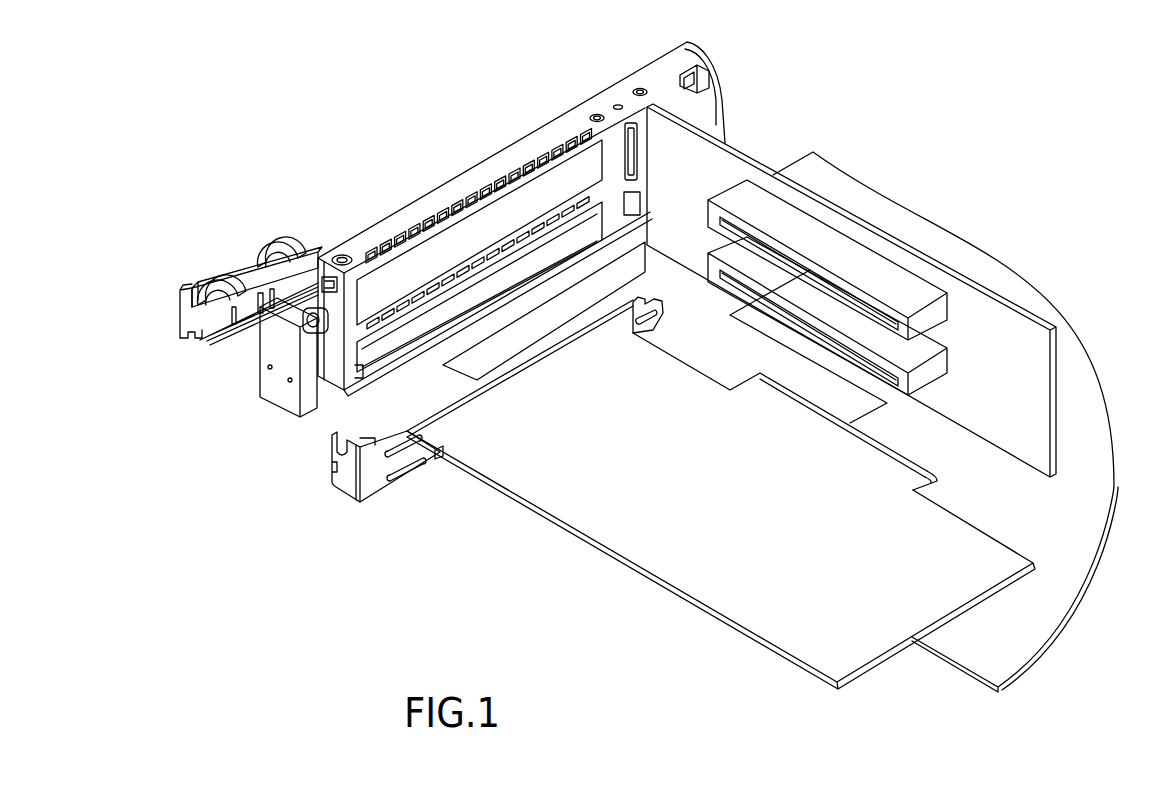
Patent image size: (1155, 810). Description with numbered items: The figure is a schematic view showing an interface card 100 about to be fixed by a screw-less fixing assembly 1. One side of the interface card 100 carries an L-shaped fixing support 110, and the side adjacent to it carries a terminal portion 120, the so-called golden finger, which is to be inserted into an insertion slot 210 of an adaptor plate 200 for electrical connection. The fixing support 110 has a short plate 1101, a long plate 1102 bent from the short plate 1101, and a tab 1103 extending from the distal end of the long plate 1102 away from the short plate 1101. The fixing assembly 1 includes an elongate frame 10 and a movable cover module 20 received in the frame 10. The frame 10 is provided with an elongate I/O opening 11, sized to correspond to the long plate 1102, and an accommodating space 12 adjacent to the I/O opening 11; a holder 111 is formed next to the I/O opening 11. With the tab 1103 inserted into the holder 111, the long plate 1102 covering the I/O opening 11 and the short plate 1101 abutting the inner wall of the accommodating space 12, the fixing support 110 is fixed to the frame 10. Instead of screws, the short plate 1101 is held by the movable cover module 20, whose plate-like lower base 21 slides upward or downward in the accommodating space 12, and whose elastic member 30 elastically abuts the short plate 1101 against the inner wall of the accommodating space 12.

The fixing assembly 1 is at (481, 116).
The frame 10 is at (441, 172).
The I/O opening 11 is at (553, 190).
The holder 111 is at (628, 112).
The accommodating space 12 is at (331, 383).
The movable cover module 20 is at (222, 248).
The lower base 21 is at (308, 298).
The elastic member 30 is at (278, 237).
The interface card 100 is at (599, 566).
The fixing support 110 is at (330, 504).
The short plate 1101 is at (332, 479).
The long plate 1102 is at (437, 461).
The tab 1103 is at (662, 320).
The terminal portion 120 is at (933, 470).
The adaptor plate 200 is at (968, 285).
The insertion slot 210 is at (826, 250).